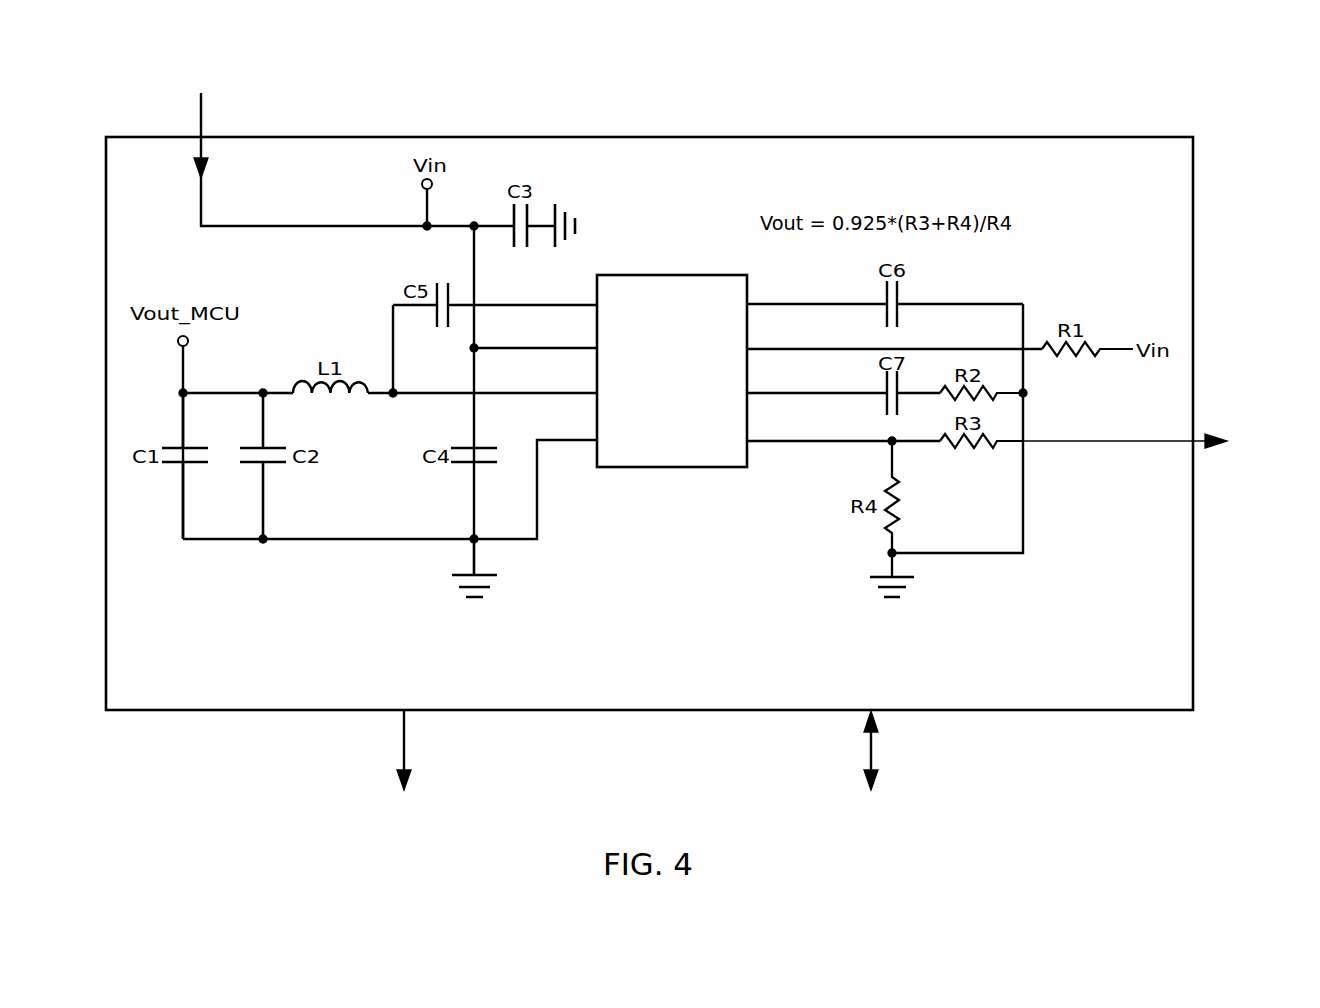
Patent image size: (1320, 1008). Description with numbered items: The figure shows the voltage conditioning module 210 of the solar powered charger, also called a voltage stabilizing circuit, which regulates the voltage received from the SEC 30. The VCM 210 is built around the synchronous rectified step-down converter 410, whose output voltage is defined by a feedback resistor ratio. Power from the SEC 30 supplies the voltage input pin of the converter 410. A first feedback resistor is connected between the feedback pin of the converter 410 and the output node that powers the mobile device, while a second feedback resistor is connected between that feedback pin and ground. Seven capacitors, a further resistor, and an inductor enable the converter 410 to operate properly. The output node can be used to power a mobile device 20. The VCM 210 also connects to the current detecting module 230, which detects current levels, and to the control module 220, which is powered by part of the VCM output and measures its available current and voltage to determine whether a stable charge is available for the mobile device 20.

The voltage conditioning module 210 is at (651, 137).
The synchronous rectified step-down converter U1 410 is at (675, 467).
The SEC 30 is at (287, 137).
The current detecting module 230 is at (403, 766).
The control module 220 is at (871, 776).
The mobile device 20 is at (1160, 438).